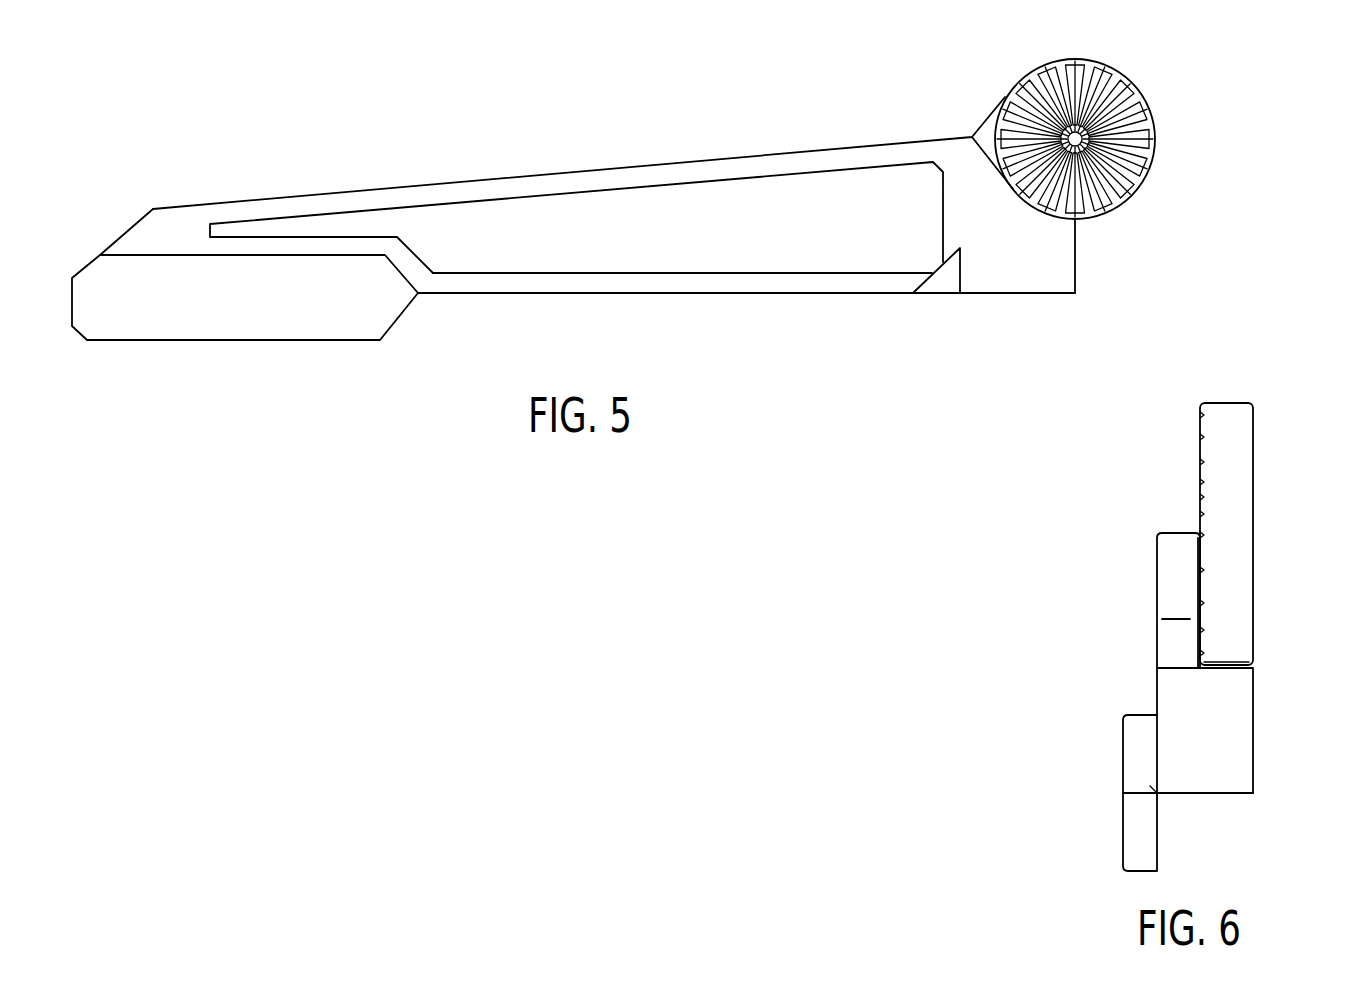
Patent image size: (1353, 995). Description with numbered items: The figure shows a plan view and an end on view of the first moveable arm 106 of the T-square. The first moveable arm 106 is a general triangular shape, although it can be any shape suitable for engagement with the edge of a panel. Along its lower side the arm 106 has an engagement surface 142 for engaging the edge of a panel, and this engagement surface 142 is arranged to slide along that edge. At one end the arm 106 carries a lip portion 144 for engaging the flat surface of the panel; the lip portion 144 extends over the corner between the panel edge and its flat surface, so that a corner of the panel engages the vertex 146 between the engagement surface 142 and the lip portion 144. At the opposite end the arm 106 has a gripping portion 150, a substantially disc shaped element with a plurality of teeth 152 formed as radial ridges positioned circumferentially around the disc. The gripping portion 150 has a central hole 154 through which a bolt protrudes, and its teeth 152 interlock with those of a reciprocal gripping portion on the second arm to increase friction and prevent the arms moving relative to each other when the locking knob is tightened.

In FIG. 5, the first moveable arm 106 is at (437, 184).
In FIG. 6, the first moveable arm 106 is at (1255, 722).
In FIG. 5, the engagement surface 142 is at (525, 293).
In FIG. 6, the engagement surface 142 is at (1212, 793).
In FIG. 5, the lip portion 144 is at (233, 340).
In FIG. 6, the lip portion 144 is at (1122, 866).
In FIG. 6, the vertex 146 is at (1158, 794).
In FIG. 5, the gripping portion 150 is at (1000, 107).
In FIG. 6, the gripping portion 150 is at (1253, 495).
In FIG. 5, the teeth 152 is at (1143, 179).
In FIG. 6, the teeth 152 is at (1199, 515).
In FIG. 5, the hole 154 is at (1133, 97).